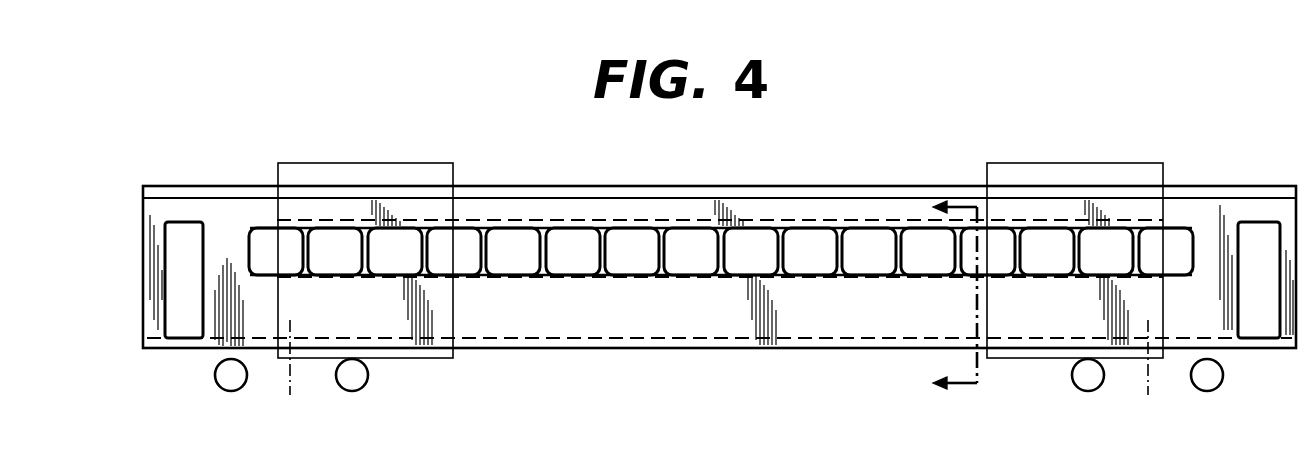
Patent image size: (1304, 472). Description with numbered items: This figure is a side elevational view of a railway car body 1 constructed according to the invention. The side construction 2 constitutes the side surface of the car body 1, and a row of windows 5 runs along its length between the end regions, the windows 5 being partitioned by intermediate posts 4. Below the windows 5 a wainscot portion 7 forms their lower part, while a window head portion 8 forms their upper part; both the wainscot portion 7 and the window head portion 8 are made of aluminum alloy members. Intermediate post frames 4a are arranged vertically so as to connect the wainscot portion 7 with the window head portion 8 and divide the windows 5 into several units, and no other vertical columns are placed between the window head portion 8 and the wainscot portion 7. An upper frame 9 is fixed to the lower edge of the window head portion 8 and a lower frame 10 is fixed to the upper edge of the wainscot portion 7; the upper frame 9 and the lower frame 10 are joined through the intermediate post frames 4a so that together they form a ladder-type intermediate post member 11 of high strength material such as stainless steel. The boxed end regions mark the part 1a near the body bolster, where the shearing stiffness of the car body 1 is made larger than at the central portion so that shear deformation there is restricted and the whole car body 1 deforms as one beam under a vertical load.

The car body 1 is at (1250, 185).
The part near the body bolster 1a is at (434, 163).
The side construction 2 is at (1207, 212).
The intermediate post 4 is at (928, 200).
The intermediate post frame 4a is at (360, 244).
The window 5 is at (808, 240).
The wainscot portion 7 is at (497, 316).
The window head portion 8 is at (494, 212).
The upper frame 9 is at (684, 216).
The lower frame 10 is at (697, 277).
The intermediate post member 11 is at (305, 220).